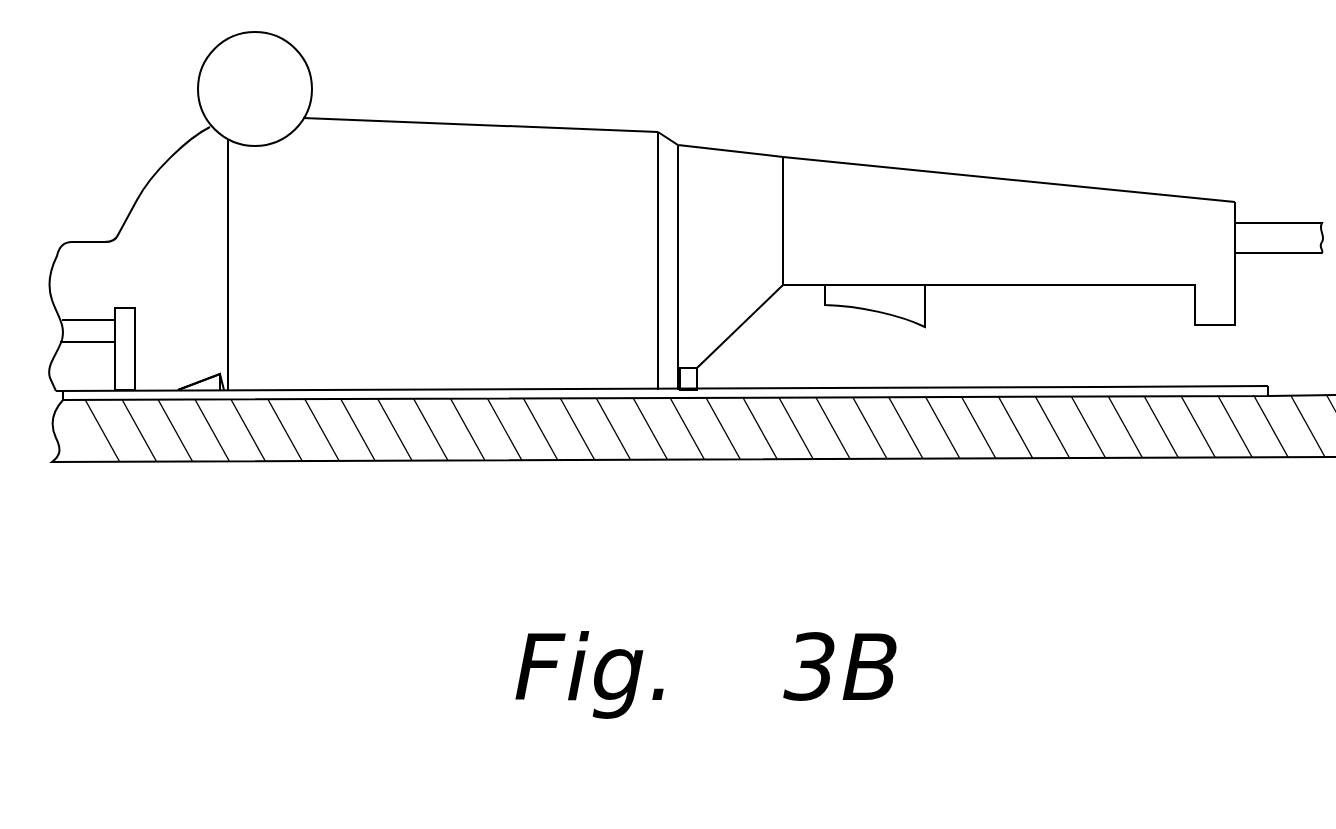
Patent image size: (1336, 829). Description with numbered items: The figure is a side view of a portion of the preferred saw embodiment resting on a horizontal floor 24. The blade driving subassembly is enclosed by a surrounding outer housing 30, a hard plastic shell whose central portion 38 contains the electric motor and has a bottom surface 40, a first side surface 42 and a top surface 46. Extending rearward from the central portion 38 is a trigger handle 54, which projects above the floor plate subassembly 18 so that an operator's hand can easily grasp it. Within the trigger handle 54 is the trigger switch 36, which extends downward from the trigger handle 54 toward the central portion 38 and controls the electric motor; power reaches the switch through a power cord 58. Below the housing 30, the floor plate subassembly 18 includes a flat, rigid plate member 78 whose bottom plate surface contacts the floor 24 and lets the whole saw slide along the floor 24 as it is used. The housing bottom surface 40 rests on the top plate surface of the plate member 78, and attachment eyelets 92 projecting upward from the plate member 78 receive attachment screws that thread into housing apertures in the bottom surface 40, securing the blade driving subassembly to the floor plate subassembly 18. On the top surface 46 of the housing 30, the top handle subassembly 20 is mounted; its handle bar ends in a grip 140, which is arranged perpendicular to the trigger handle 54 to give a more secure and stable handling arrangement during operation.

The grip 140 is at (283, 107).
The top handle subassembly 20 is at (332, 70).
The top surface 46 is at (473, 125).
The central portion 38 is at (458, 286).
The outer housing 30 is at (618, 185).
The first side surface 42 is at (622, 284).
The trigger handle 54 is at (1102, 249).
The power cord 58 is at (1283, 237).
The trigger switch 36 is at (912, 302).
The attachment eyelets 92 is at (697, 378).
The floor plate subassembly 18 is at (1244, 360).
The bottom surface 40 is at (410, 392).
The plate member 78 is at (1138, 390).
The floor 24 is at (520, 450).